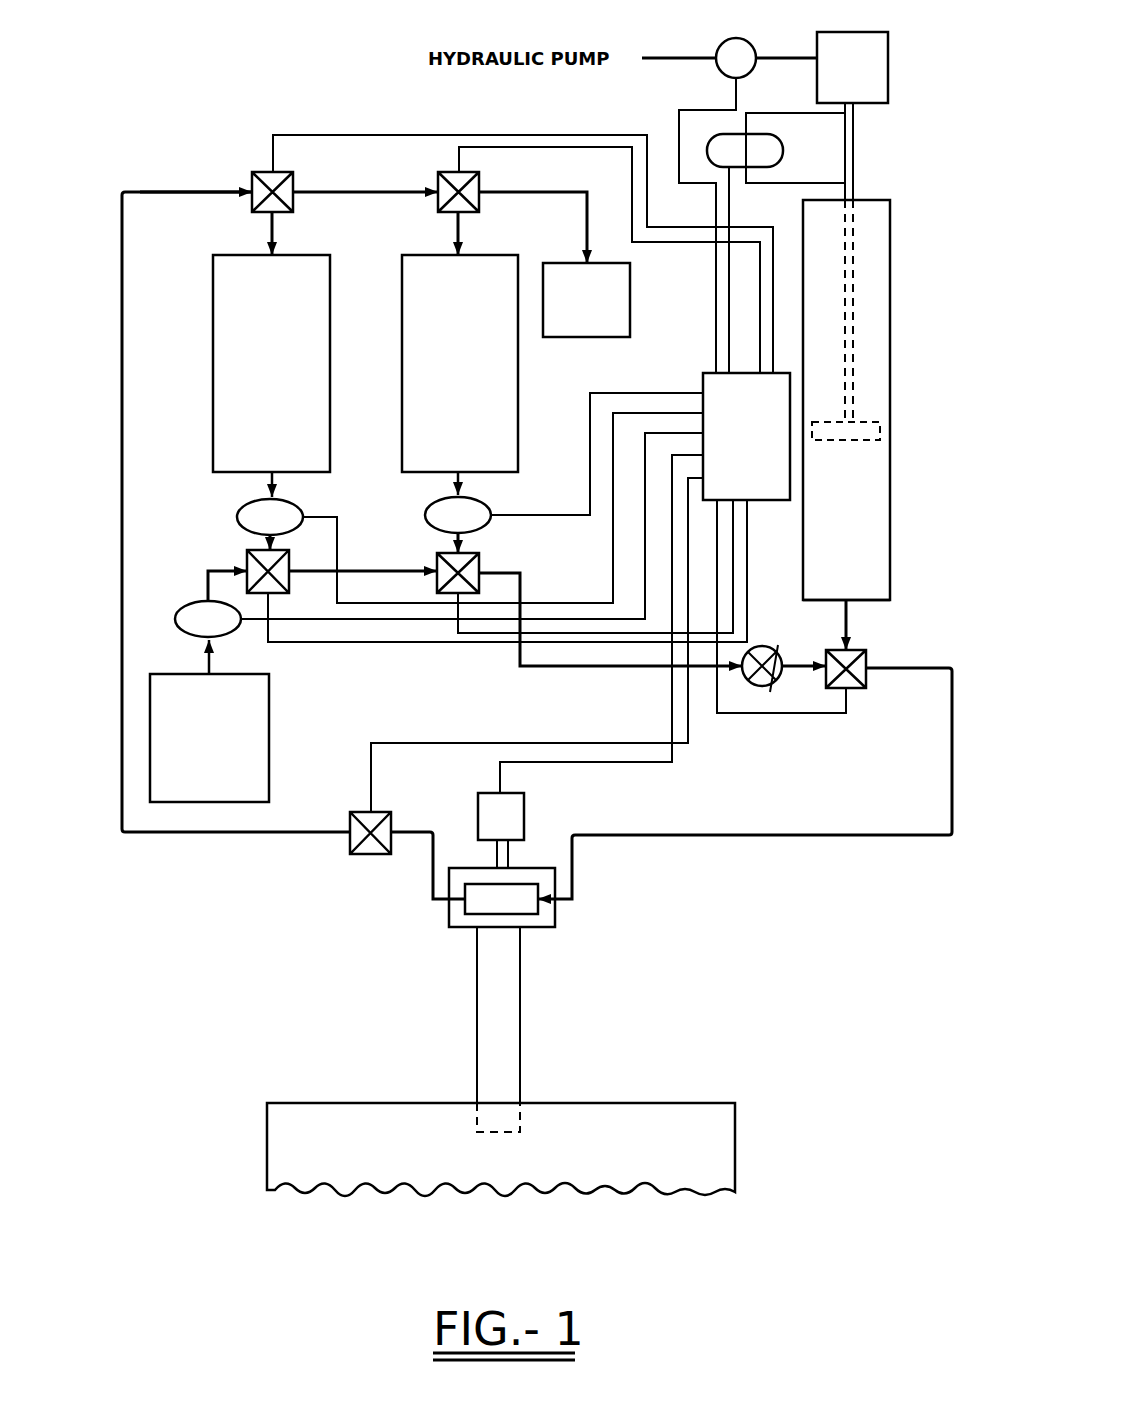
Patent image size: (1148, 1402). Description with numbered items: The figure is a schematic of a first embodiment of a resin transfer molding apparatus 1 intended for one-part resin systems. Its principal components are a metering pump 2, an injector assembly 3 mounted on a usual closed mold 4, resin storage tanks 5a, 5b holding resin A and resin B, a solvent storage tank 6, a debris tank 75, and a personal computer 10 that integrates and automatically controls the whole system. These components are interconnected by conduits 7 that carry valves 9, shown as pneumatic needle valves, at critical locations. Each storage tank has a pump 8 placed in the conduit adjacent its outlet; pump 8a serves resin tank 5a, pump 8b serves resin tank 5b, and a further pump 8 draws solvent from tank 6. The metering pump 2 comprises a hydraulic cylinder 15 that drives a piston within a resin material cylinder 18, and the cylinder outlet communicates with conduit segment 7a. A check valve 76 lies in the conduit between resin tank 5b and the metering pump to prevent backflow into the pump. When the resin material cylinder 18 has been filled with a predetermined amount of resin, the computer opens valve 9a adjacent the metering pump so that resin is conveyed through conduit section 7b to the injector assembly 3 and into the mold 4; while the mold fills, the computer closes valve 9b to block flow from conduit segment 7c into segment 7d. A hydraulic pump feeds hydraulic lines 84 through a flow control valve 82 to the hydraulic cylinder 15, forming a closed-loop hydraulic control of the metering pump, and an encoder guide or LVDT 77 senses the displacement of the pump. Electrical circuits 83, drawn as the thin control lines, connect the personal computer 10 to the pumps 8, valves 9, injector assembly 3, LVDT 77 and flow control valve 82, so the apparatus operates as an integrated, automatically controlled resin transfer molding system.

The resin transfer molding apparatus 1 is at (740, 896).
The metering pump 2 is at (877, 197).
The injector assembly 3 is at (554, 930).
The closed mold 4 is at (578, 1103).
The resin storage tank 5a is at (214, 254).
The resin storage tank 5b is at (406, 254).
The solvent storage tank 6 is at (269, 703).
The conduits 7 is at (328, 192).
The conduit segment 7a is at (844, 622).
The conduit section 7b is at (961, 768).
The conduit segment 7c is at (434, 892).
The conduit segment 7d is at (169, 190).
The pumps 8 is at (185, 608).
The pump 8a is at (237, 514).
The pump 8b is at (425, 510).
The valves 9 is at (258, 172).
The valve 9a is at (862, 688).
The valve 9b is at (370, 855).
The personal computer 10 is at (703, 376).
The hydraulic cylinder 15 is at (888, 68).
The resin material cylinder 18 is at (890, 595).
The debris tank 75 is at (630, 304).
The check valve 76 is at (778, 678).
The encoder guide 77 is at (783, 150).
The flow control valve 82 is at (720, 76).
The electrical circuits 83 is at (347, 136).
The hydraulic lines 84 is at (693, 58).